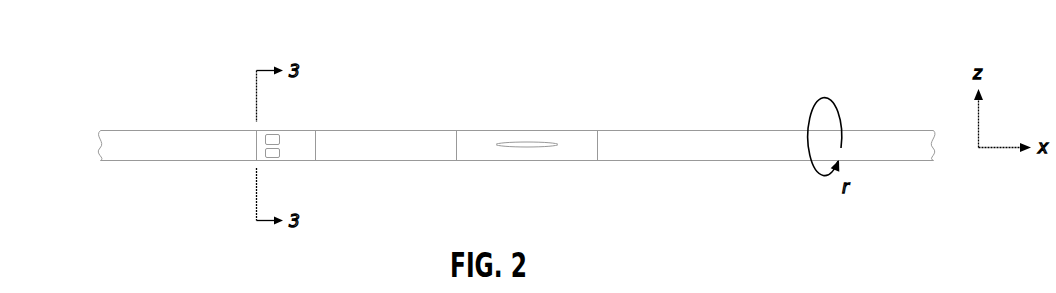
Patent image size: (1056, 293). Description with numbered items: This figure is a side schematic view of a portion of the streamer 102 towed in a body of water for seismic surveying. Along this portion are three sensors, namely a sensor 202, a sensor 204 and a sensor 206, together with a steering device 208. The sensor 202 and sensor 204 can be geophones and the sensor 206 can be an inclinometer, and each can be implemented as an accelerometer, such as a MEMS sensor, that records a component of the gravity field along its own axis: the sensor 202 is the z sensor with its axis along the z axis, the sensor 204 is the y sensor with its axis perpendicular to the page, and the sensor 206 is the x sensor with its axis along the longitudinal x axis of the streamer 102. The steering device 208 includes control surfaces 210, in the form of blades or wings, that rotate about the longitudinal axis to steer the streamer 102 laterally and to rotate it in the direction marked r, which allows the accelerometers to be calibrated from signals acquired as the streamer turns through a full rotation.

The streamer 102 is at (140, 124).
The sensor (z sensor) 202 is at (280, 135).
The sensor (y sensor) 204 is at (280, 156).
The sensor (x sensor) 206 is at (385, 130).
The steering device 208 is at (485, 130).
The control surfaces 210 is at (552, 140).